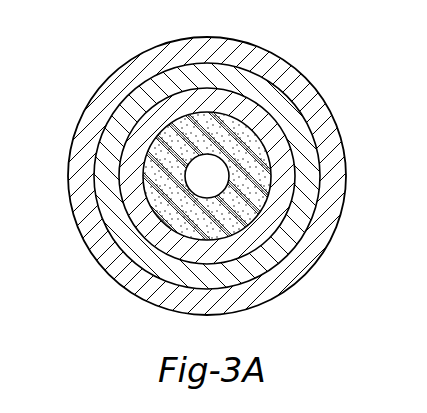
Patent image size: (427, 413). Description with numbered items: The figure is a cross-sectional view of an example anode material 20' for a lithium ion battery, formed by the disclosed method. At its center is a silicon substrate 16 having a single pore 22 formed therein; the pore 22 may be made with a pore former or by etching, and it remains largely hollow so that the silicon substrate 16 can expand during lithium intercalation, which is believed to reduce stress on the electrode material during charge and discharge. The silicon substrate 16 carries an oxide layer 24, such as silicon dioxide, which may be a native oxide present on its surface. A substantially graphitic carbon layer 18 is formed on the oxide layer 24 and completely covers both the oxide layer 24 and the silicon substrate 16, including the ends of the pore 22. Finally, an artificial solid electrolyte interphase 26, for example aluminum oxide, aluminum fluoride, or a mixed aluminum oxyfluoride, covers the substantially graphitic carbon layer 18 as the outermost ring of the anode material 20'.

The anode material 20' is at (342, 36).
The pore 22 is at (196, 165).
The silicon substrate 16 is at (250, 182).
The oxide layer 24 is at (275, 147).
The substantially graphitic carbon layer 18 is at (290, 237).
The artificial solid electrolyte interphase 26 is at (320, 225).